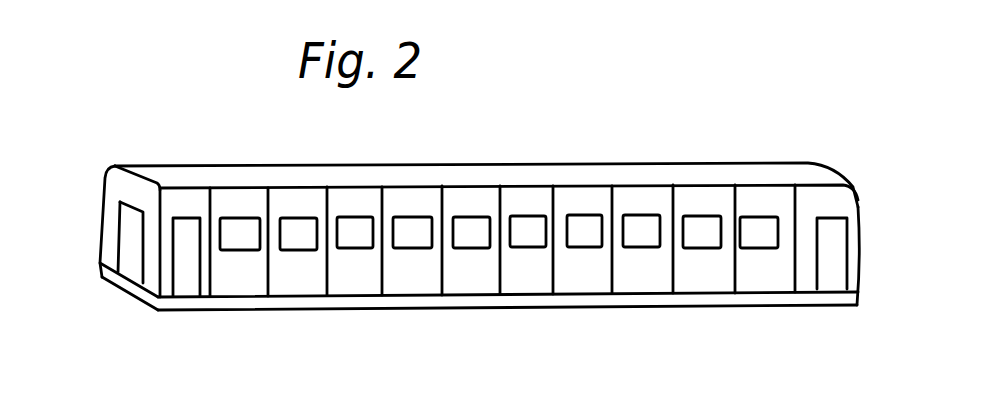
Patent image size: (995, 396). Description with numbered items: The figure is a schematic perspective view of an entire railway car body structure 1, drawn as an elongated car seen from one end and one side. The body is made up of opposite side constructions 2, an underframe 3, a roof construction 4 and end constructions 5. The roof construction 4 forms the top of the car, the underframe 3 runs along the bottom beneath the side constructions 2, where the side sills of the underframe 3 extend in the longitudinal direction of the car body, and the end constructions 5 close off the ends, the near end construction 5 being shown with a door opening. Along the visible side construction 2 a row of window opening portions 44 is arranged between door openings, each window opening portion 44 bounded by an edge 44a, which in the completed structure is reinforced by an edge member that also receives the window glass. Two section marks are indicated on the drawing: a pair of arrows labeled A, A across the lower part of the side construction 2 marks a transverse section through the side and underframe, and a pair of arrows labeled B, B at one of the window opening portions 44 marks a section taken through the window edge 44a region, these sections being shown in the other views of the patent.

The railway car body structure 1 is at (252, 167).
The side constructions 2 is at (653, 280).
The underframe 3 is at (312, 310).
The roof construction 4 is at (467, 175).
The end constructions 5 is at (103, 230).
The window opening portion 44 is at (595, 222).
The edge of the window opening portion 44a is at (595, 247).
The section line A- A is at (467, 265).
The section line B- B is at (533, 228).